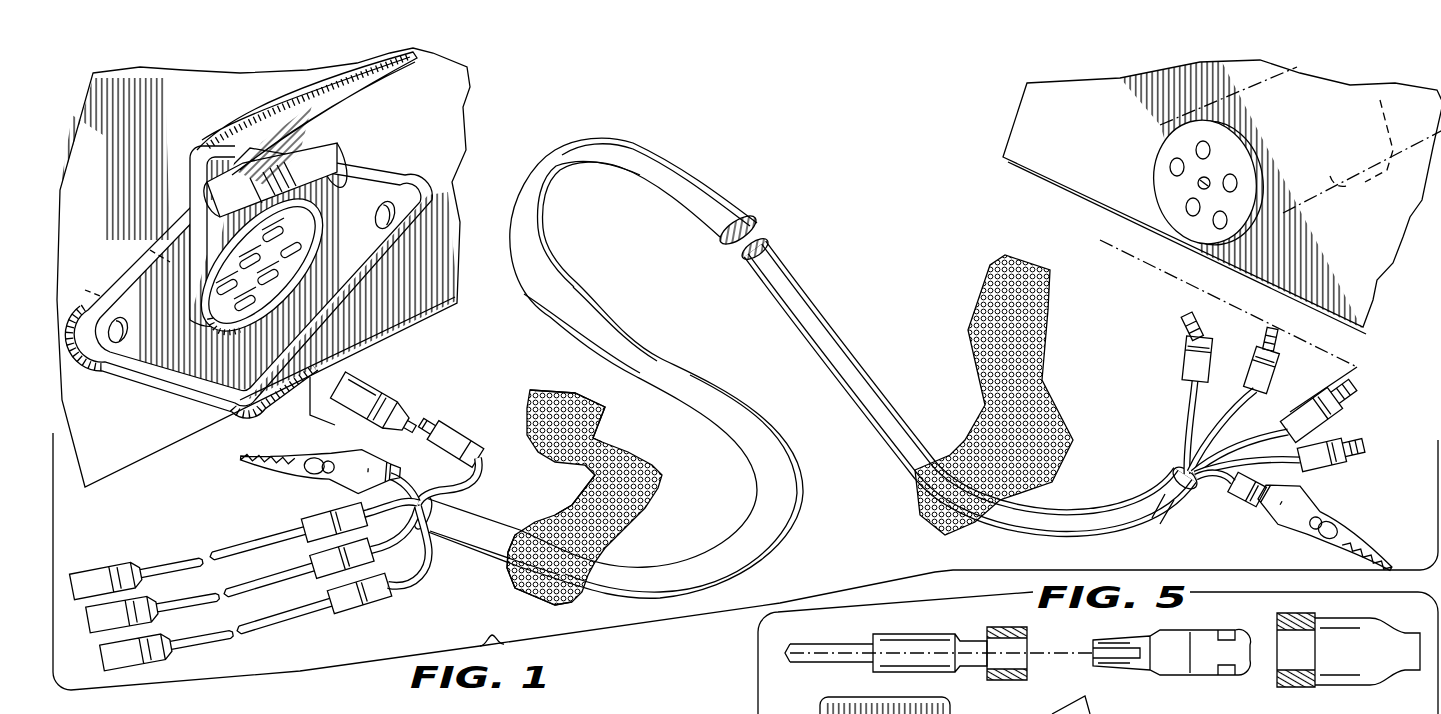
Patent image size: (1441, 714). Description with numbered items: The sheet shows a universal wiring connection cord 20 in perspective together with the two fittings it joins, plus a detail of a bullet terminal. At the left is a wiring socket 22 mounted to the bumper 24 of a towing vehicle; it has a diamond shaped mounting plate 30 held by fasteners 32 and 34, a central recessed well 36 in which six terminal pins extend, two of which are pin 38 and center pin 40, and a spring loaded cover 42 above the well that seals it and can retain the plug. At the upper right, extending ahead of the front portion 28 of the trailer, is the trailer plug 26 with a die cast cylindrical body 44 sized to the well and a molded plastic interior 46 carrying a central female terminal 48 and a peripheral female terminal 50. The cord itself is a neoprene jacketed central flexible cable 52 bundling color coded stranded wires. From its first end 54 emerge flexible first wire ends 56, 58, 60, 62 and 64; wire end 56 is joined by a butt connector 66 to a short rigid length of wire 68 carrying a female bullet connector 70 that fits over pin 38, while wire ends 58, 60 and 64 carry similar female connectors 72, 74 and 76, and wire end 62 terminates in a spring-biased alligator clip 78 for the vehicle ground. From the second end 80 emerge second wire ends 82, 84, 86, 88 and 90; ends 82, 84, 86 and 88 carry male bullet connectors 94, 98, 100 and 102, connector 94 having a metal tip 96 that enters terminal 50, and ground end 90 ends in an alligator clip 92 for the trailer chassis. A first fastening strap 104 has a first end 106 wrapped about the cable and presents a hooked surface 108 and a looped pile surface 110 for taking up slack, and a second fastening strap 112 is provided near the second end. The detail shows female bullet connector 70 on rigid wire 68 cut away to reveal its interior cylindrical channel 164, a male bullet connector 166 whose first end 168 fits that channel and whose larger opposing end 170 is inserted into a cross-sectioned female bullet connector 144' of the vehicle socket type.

In FIG. 1, the universal wiring connection cord 20 is at (798, 359).
In FIG. 1, the wiring socket 22 is at (261, 264).
In FIG. 1, the bumper 24 is at (448, 134).
In FIG. 1, the trailer plug 26 is at (1322, 212).
In FIG. 1, the front portion 28 is at (1209, 236).
In FIG. 1, the mounting plate 30 is at (296, 208).
In FIG. 1, the fastener 32 is at (393, 190).
In FIG. 1, the fastener 34 is at (123, 342).
In FIG. 1, the recessed well 36 is at (318, 222).
In FIG. 1, the electrical terminal pin 38 is at (212, 328).
In FIG. 1, the electrical terminal pin 40 is at (305, 287).
In FIG. 1, the spring loaded cover 42 is at (271, 112).
In FIG. 1, the cylindrical body 44 is at (1332, 184).
In FIG. 1, the molded plastic interior 46 is at (1194, 183).
In FIG. 1, the central female terminal 48 is at (1198, 181).
In FIG. 1, the peripheral female terminal 50 is at (1173, 164).
In FIG. 5, the peripheral female terminal 50 is at (1100, 705).
In FIG. 1, the central flexible cable 52 is at (838, 360).
In FIG. 1, the first end 54 is at (484, 552).
In FIG. 1, the first wire end 56 is at (412, 597).
In FIG. 1, the first wire end 58 is at (398, 565).
In FIG. 1, the first wire end 60 is at (368, 512).
In FIG. 1, the first wire end 62 is at (412, 473).
In FIG. 1, the first wire end 64 is at (490, 462).
In FIG. 1, the butt connector 66 is at (357, 615).
In FIG. 1, the rigid length of wire 68 is at (287, 631).
In FIG. 5, the rigid length of wire 68 is at (828, 647).
In FIG. 1, the female bullet connector 70 is at (150, 664).
In FIG. 5, the female bullet connector 70 is at (977, 627).
In FIG. 1, the female connector 72 is at (128, 607).
In FIG. 1, the female connector 74 is at (94, 568).
In FIG. 1, the female connector 76 is at (371, 381).
In FIG. 1, the alligator clip 78 is at (290, 445).
In FIG. 1, the second end 80 is at (1130, 507).
In FIG. 1, the second wire end 82 is at (1192, 388).
In FIG. 1, the second wire end 84 is at (1222, 405).
In FIG. 1, the second wire end 86 is at (1253, 430).
In FIG. 1, the second wire end 88 is at (1250, 455).
In FIG. 1, the second wire end 90 is at (1218, 470).
In FIG. 1, the alligator clip 92 is at (1340, 508).
In FIG. 1, the male bullet connector 94 is at (1183, 343).
In FIG. 1, the metal tip 96 is at (1180, 317).
In FIG. 1, the male bullet connector 98 is at (1258, 350).
In FIG. 1, the male bullet connector 100 is at (1343, 397).
In FIG. 1, the male bullet connector 102 is at (1338, 443).
In FIG. 1, the first fastening strap 104 is at (588, 504).
In FIG. 1, the first end 106 is at (540, 594).
In FIG. 1, the hooked surface 108 is at (623, 447).
In FIG. 1, the looped pile surface 110 is at (565, 508).
In FIG. 1, the second fastening strap 112 is at (1025, 352).
In FIG. 5, the female bullet connector 144' is at (1348, 662).
In FIG. 5, the interior cylindrical channel 164 is at (1023, 643).
In FIG. 5, the male bullet connector 166 is at (1153, 665).
In FIG. 5, the first end 168 is at (1107, 673).
In FIG. 5, the opposing end 170 is at (1247, 667).